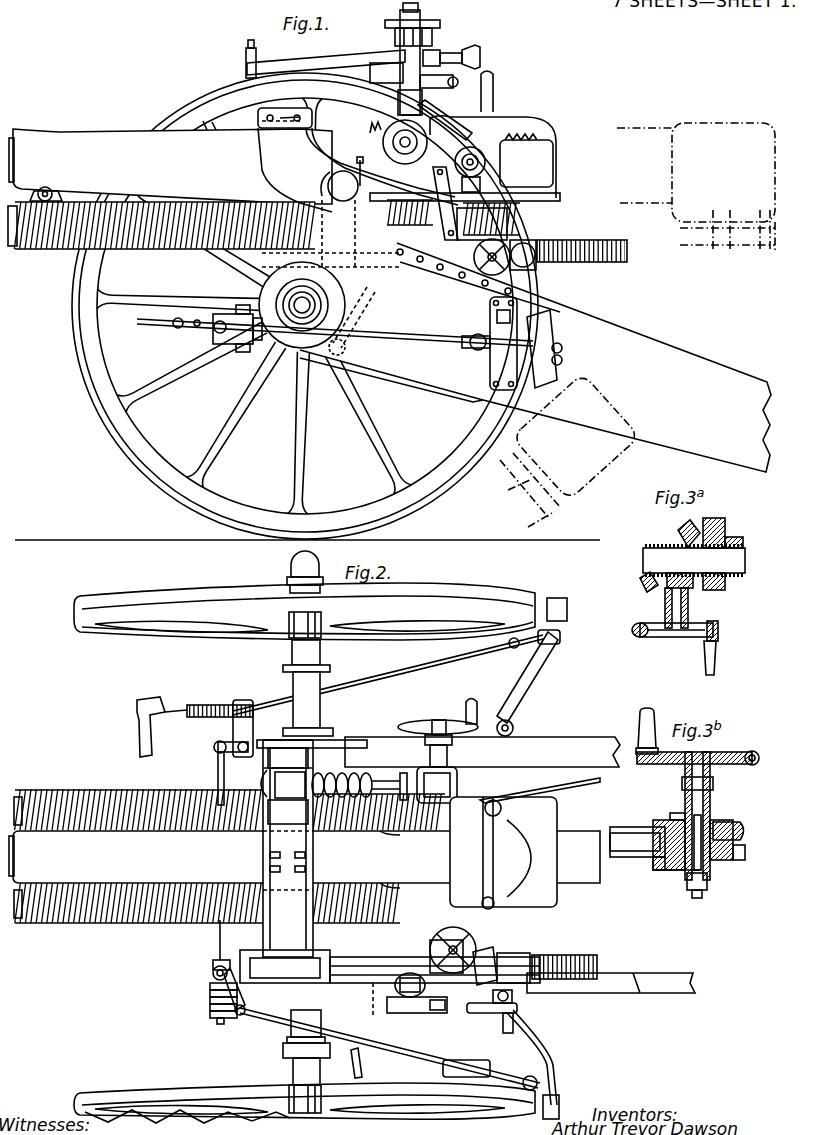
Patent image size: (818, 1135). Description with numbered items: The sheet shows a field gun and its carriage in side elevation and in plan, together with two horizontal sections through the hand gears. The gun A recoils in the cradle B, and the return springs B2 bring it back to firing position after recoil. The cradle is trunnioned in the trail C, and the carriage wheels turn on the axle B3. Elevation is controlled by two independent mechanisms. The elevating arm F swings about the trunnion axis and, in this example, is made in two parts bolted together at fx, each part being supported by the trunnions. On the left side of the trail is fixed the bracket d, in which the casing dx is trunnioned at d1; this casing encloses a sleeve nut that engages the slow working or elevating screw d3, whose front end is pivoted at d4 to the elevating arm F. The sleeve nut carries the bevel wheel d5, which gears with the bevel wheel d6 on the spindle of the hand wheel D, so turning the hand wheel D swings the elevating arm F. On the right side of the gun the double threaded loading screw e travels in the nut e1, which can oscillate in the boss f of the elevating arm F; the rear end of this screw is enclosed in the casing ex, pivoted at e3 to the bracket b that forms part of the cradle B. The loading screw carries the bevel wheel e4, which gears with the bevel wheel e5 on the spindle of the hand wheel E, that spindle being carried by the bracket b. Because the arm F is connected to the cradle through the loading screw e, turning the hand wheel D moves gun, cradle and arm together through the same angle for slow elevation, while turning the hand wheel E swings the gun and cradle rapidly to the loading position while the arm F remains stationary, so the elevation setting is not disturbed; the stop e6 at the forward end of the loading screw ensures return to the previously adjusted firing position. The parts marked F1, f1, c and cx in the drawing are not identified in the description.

In FIG. 1, the gun A is at (170, 166).
In FIG. 2, the gun A is at (304, 859).
In FIG. 1, the cradle B is at (421, 306).
In FIG. 2, the cradle B is at (325, 856).
In FIG. 1, the return springs B2 is at (214, 248).
In FIG. 2, the return springs B2 is at (178, 795).
In FIG. 1, the axle of the carriage-wheels B3 is at (283, 326).
In FIG. 2, the axle of the carriage-wheels B3 is at (308, 818).
In FIG. 1, the trail C is at (535, 357).
In FIG. 2, the trail C is at (520, 865).
In FIG. 1, the hand wheel D is at (535, 267).
In FIG. 2, the hand wheel D is at (499, 1011).
In FIG. 3A, the hand wheel D is at (675, 648).
In FIG. 2, the hand wheel E is at (432, 722).
In FIG. 3B, the hand wheel E is at (697, 736).
In FIG. 1, the elevating arm F is at (358, 160).
In FIG. 2, the elevating arm F is at (297, 848).
In FIG. 2, the frame lower part F1 is at (285, 941).
In FIG. 1, the bolts fx is at (302, 116).
In FIG. 2, the bolts fx is at (268, 858).
In FIG. 2, the boss or projection f is at (290, 785).
In FIG. 1, the link f1 is at (331, 256).
In FIG. 1, the bracket d is at (492, 268).
In FIG. 2, the bracket d is at (471, 937).
In FIG. 1, the casing dx is at (528, 208).
In FIG. 2, the casing dx is at (513, 968).
In FIG. 3A, the casing dx is at (727, 548).
In FIG. 1, the trunnion d1 is at (515, 228).
In FIG. 2, the trunnion d1 is at (288, 757).
In FIG. 1, the elevating screw d3 is at (590, 244).
In FIG. 2, the elevating screw d3 is at (566, 958).
In FIG. 3A, the elevating screw d3 is at (742, 551).
In FIG. 1, the pivot d4 is at (376, 290).
In FIG. 2, the pivot d4 is at (382, 992).
In FIG. 3A, the bevel wheel d5 is at (680, 538).
In FIG. 3A, the bevel wheel d6 is at (665, 600).
In FIG. 2, the loading screw e is at (336, 762).
In FIG. 2, the nut e1 is at (288, 822).
In FIG. 3B, the pivot e3 is at (700, 890).
In FIG. 3B, the bevel wheel e4 is at (660, 871).
In FIG. 3B, the bevel wheel e5 is at (668, 822).
In FIG. 2, the stop e6 is at (266, 781).
In FIG. 3B, the casing ex is at (690, 816).
In FIG. 3B, the tube c is at (628, 856).
In FIG. 2, the box / bearing cx is at (437, 769).
In FIG. 3B, the bracket b is at (668, 872).